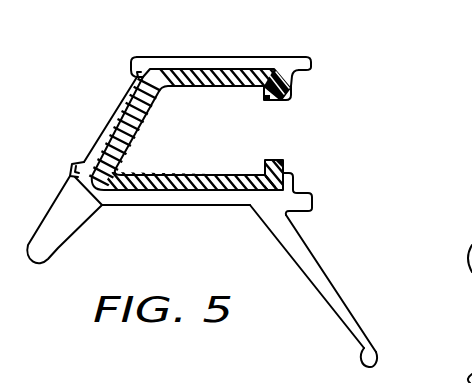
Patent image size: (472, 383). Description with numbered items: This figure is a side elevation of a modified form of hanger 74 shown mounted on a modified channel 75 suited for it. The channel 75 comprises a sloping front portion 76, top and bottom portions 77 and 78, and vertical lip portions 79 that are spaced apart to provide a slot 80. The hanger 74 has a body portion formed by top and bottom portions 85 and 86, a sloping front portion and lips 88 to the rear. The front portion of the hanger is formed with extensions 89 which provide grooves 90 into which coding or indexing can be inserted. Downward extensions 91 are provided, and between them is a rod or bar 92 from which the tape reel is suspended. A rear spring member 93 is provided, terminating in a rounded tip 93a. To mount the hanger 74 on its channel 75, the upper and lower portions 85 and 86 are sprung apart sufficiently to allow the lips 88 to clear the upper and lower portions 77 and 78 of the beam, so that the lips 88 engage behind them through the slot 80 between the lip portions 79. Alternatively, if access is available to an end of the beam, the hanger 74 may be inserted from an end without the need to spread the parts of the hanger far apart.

The hanger 74 is at (176, 220).
The channel 75 is at (302, 163).
The sloping front portion 76 is at (146, 134).
The top portion 77 is at (200, 87).
The bottom portion 78 is at (201, 175).
The vertical lip portions 79 is at (270, 160).
The slot 80 is at (268, 98).
The top portion 85 is at (221, 56).
The bottom portion 86 is at (205, 206).
The lips 88 is at (296, 78).
The extensions 89 is at (471, 42).
The grooves 90 is at (134, 72).
The downward extensions 91 is at (49, 196).
The rod or bar 92 is at (32, 240).
The rear spring member 93 is at (310, 250).
The rounded tip 93a is at (380, 353).